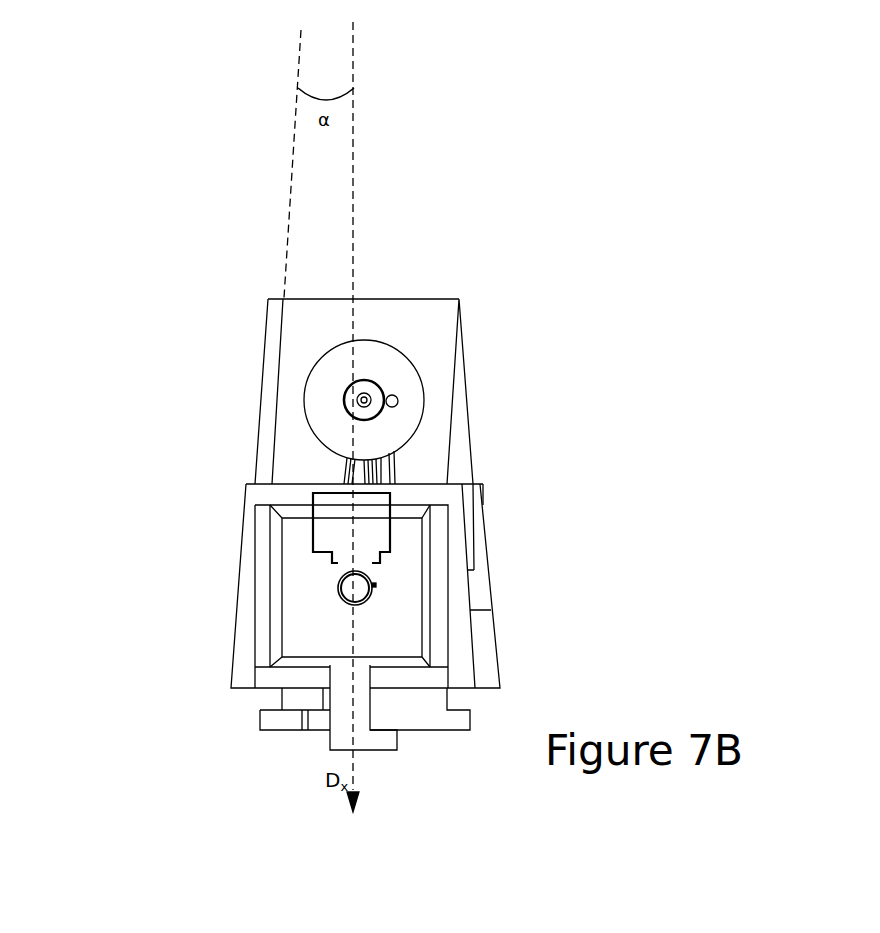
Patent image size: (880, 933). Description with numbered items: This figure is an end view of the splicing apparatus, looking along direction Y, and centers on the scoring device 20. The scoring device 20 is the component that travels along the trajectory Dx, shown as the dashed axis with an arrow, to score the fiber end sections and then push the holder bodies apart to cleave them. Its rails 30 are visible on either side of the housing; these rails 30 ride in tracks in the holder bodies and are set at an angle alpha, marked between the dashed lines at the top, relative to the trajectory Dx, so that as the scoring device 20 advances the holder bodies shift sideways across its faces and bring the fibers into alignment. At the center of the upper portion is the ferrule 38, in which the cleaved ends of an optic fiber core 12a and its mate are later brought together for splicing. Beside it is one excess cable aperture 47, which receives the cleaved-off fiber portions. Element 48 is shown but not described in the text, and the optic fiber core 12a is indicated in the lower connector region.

The scoring device 20 is at (376, 398).
The rail 30 is at (273, 412).
The ferrule 38 is at (384, 397).
The excess cable aperture 47 is at (396, 406).
The front mounting plate 48 is at (441, 349).
The optic fiber core 12a is at (362, 588).